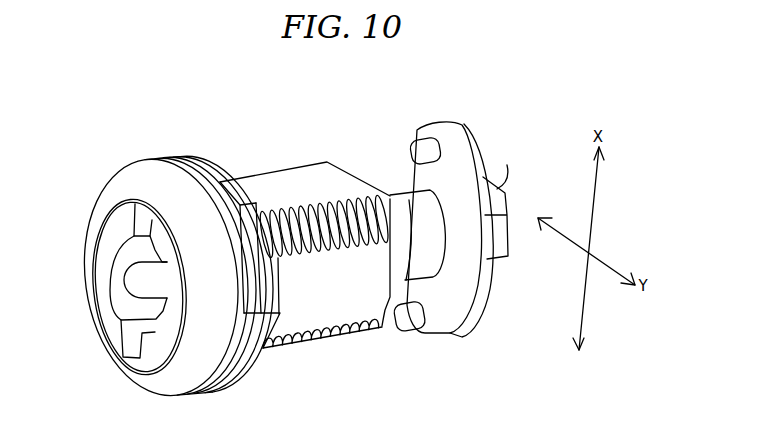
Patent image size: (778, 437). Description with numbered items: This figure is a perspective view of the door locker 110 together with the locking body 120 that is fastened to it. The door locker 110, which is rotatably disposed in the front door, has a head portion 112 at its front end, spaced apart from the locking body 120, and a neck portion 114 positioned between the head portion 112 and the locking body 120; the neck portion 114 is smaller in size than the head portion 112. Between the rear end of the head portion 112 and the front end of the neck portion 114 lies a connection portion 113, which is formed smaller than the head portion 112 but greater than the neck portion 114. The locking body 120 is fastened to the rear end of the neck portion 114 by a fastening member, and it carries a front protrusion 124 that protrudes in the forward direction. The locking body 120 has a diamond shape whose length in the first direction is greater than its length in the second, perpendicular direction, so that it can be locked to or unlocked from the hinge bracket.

The door locker 110 is at (202, 152).
The head portion 112 is at (133, 178).
The connection portion 113 is at (273, 180).
The neck portion 114 is at (412, 196).
The locking body 120 is at (458, 158).
The front protrusion 124 is at (413, 146).